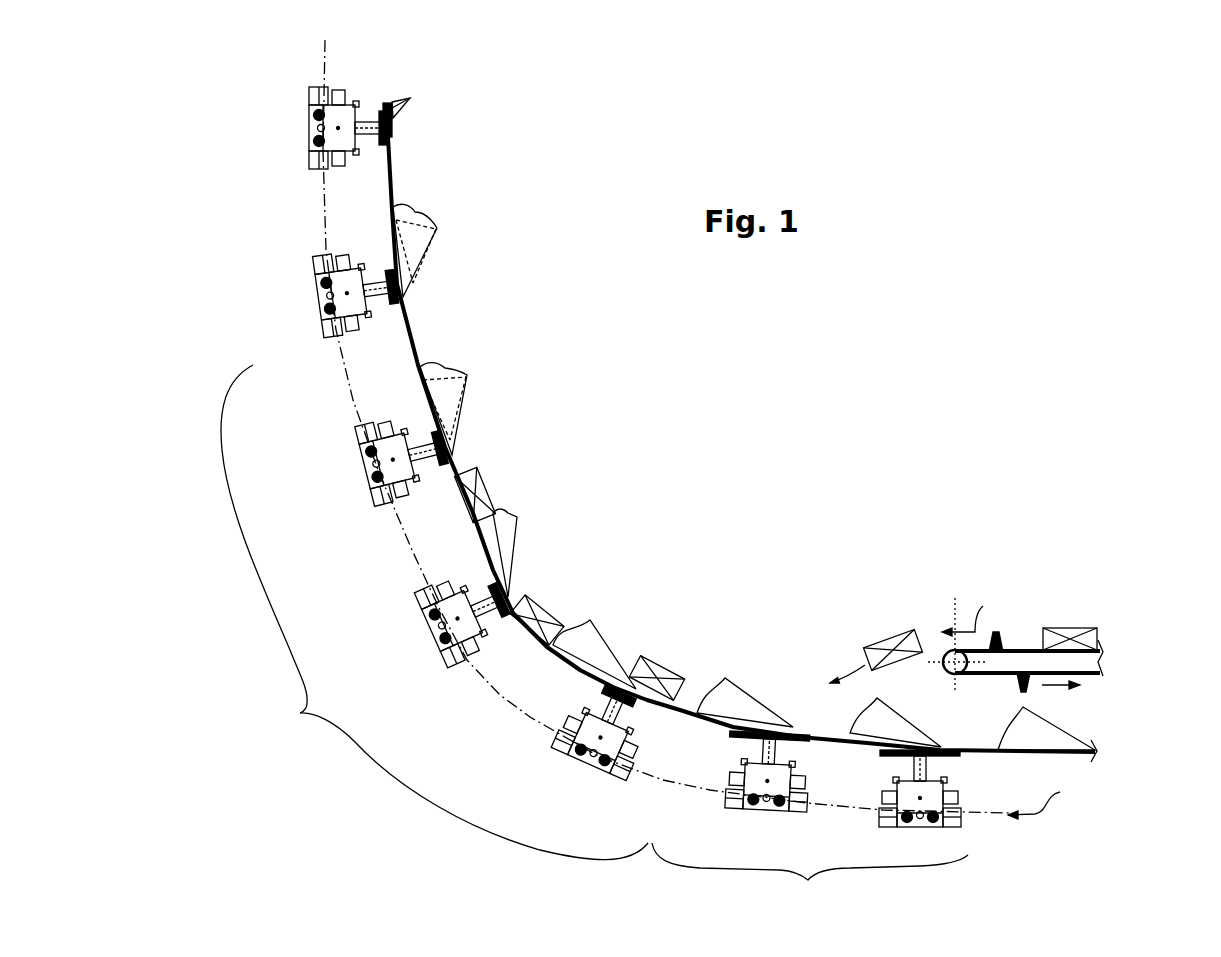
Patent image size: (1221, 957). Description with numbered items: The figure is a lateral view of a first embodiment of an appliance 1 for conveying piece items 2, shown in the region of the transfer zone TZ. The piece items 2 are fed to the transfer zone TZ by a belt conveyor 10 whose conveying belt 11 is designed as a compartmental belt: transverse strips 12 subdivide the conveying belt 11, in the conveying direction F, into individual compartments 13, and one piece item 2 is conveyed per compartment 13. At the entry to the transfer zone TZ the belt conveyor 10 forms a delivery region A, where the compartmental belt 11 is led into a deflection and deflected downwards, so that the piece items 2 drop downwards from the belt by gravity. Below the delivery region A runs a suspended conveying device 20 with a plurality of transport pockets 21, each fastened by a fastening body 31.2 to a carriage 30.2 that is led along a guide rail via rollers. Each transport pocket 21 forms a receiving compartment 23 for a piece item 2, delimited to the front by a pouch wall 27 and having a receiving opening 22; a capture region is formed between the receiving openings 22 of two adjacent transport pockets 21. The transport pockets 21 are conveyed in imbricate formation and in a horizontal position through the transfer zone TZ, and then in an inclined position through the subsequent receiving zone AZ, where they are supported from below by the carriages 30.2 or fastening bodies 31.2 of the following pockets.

The appliance 1 is at (1013, 515).
The piece item 2 is at (413, 248).
The belt conveyor 10 is at (1113, 600).
The conveying belt 11 is at (1010, 650).
The transverse strips 12 is at (996, 632).
The compartment 13 is at (1027, 642).
The suspended conveying device 20 is at (318, 224).
The transport pocket 21 is at (420, 272).
The receiving opening 22 is at (450, 365).
The receiving compartment 23 is at (410, 276).
The pouch wall 27 is at (517, 538).
The carriage 30.2 is at (338, 130).
The fastening body 31.2 is at (372, 122).
The delivery region A is at (937, 648).
The conveying direction F is at (1010, 702).
The receiving zone AZ is at (434, 612).
The transfer zone TZ is at (810, 875).